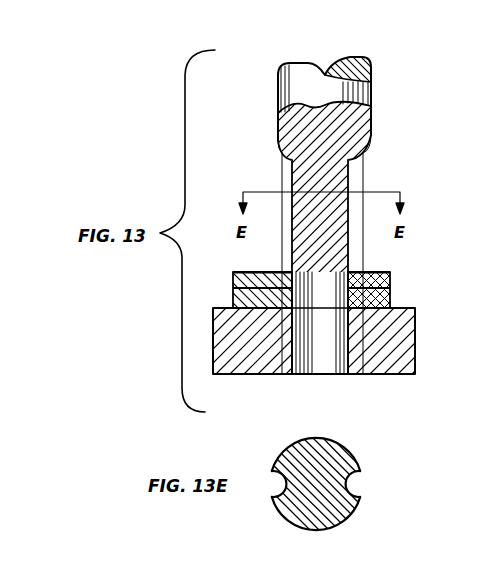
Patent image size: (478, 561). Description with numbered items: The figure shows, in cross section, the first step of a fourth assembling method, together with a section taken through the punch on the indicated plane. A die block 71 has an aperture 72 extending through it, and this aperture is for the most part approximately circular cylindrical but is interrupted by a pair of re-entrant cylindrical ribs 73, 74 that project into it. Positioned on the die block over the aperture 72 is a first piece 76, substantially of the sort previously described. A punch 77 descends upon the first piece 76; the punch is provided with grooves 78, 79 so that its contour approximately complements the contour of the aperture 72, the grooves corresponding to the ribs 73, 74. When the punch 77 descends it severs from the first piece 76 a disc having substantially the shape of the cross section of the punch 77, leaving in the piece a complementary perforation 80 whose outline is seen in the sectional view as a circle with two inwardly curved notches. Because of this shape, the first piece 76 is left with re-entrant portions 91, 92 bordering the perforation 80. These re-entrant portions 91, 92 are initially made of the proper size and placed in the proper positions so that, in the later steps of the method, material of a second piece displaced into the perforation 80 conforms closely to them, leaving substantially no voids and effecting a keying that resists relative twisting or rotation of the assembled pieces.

The die block 71 is at (412, 371).
The aperture 72 is at (333, 345).
The re-entrant cylindrical rib 73 is at (290, 376).
The re-entrant cylindrical rib 74 is at (350, 378).
The first piece 76 is at (392, 296).
The punch 77 is at (372, 132).
The groove 78 is at (282, 164).
The groove 79 is at (358, 169).
The perforation 80 is at (325, 295).
The re-entrant portion 91 is at (236, 284).
The re-entrant portion 92 is at (374, 278).